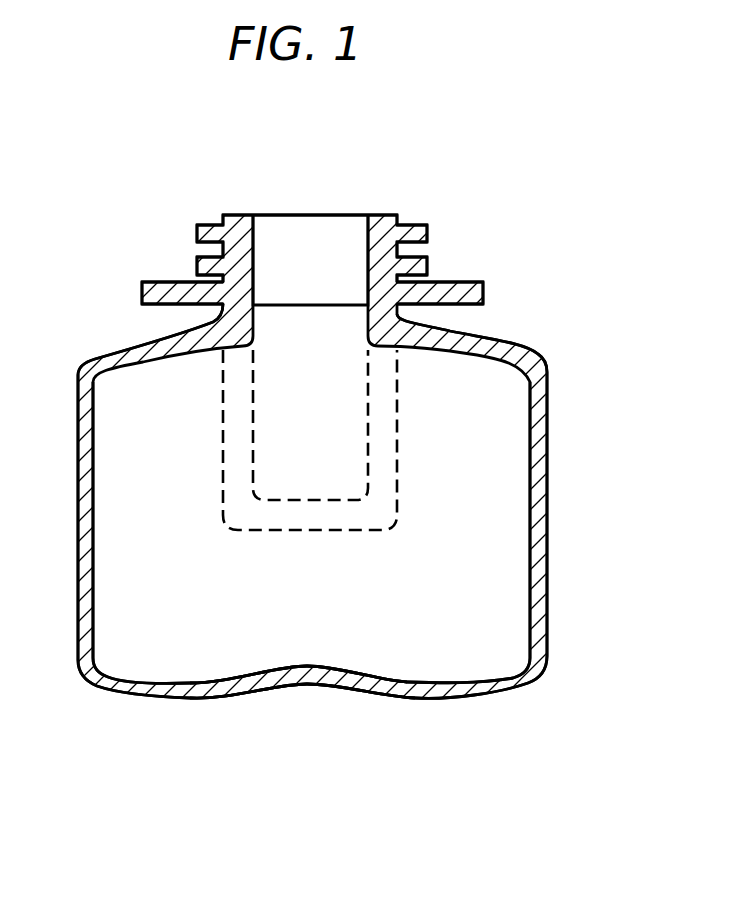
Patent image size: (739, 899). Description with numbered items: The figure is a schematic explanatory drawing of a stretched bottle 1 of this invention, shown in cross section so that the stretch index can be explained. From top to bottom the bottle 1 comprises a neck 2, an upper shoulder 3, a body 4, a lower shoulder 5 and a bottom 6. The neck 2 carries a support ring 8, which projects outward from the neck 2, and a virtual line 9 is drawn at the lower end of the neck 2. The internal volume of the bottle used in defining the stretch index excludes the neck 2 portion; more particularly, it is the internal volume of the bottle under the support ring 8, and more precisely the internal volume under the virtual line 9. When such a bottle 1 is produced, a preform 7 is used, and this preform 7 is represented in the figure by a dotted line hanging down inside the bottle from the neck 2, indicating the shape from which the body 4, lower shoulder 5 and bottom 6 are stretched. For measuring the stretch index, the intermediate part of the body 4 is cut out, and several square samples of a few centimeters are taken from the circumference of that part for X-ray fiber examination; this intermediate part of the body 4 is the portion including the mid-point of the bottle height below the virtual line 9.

The bottle 1 is at (83, 280).
The neck 2 is at (450, 265).
The upper shoulder 3 is at (548, 353).
The body 4 is at (552, 493).
The lower shoulder 5 is at (550, 663).
The bottom 6 is at (308, 685).
The preform 7 is at (395, 480).
The support ring 8 is at (467, 291).
The virtual line 9 is at (313, 303).